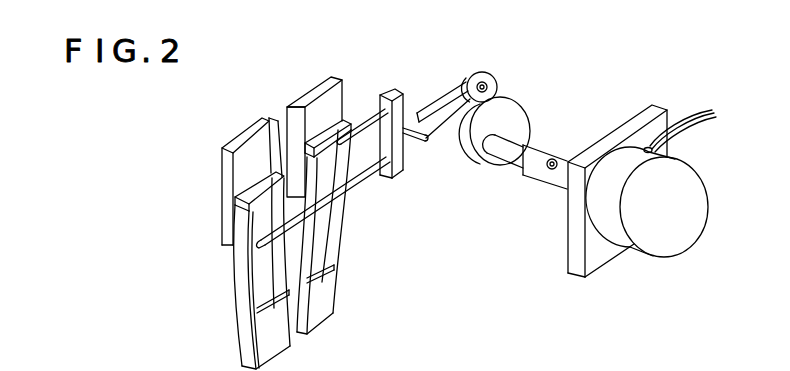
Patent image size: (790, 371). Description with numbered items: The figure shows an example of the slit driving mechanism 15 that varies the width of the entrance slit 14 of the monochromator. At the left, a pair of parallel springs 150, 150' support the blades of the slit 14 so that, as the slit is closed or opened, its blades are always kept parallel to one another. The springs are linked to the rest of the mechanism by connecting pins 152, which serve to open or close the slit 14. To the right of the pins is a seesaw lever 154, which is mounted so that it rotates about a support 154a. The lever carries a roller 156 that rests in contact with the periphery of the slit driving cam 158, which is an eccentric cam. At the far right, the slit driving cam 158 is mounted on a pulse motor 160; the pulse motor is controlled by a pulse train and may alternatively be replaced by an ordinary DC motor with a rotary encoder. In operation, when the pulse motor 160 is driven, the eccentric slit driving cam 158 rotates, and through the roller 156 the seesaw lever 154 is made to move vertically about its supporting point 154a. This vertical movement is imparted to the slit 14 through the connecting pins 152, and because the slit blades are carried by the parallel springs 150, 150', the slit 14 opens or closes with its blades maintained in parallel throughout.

The entrance slit 14 is at (268, 121).
The slit driving mechanism 15 is at (377, 63).
The parallel spring 150 is at (240, 270).
The parallel spring 150' is at (355, 227).
The connecting pins 152 is at (362, 129).
The seesaw lever 154 is at (437, 101).
The support 154a is at (425, 139).
The roller 156 is at (497, 61).
The slit driving cam 158 is at (555, 104).
The pulse motor 160 is at (621, 246).